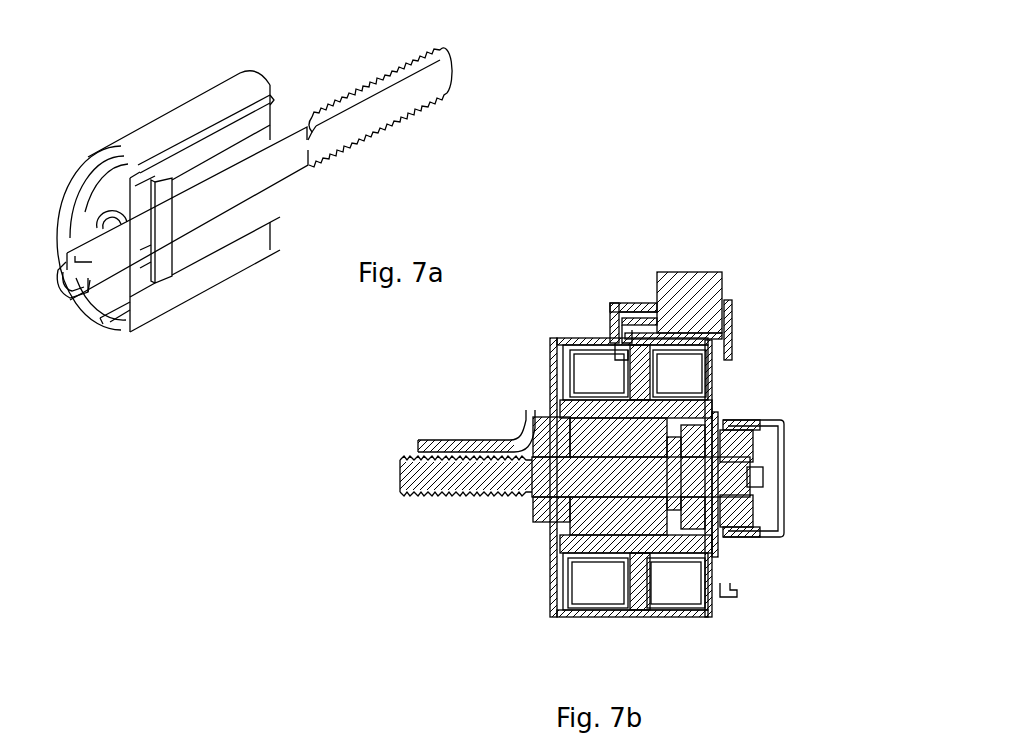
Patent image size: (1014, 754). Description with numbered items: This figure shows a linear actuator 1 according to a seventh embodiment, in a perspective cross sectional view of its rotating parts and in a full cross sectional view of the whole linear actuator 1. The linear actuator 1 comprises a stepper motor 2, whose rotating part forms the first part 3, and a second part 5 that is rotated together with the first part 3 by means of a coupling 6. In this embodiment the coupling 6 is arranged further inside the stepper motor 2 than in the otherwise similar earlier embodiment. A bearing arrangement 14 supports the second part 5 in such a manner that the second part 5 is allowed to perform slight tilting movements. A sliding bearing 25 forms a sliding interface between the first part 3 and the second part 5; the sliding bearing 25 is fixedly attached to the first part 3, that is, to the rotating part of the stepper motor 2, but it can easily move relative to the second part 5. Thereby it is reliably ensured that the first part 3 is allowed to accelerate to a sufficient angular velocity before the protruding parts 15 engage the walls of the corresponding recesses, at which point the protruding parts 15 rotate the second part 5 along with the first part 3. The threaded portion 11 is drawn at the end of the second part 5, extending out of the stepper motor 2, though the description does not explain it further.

In FIG. 7A, the linear actuator 1 is at (140, 88).
In FIG. 7B, the linear actuator 1 is at (709, 254).
In FIG. 7B, the stepper motor 2 is at (672, 582).
In FIG. 7A, the first part 3 is at (148, 297).
In FIG. 7B, the first part 3 is at (618, 522).
In FIG. 7A, the second part 5 is at (290, 156).
In FIG. 7B, the second part 5 is at (532, 480).
In FIG. 7A, the coupling 6 is at (200, 298).
In FIG. 7B, the coupling 6 is at (690, 500).
In FIG. 7A, the threaded portion 11 is at (387, 74).
In FIG. 7B, the threaded portion 11 is at (450, 493).
In FIG. 7B, the bearing arrangement 14 is at (757, 433).
In FIG. 7A, the protruding parts 15 is at (160, 186).
In FIG. 7B, the protruding parts 15 is at (680, 493).
In FIG. 7A, the sliding bearing 25 is at (230, 153).
In FIG. 7B, the sliding bearing 25 is at (580, 440).